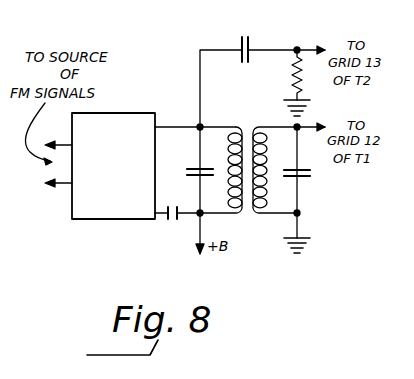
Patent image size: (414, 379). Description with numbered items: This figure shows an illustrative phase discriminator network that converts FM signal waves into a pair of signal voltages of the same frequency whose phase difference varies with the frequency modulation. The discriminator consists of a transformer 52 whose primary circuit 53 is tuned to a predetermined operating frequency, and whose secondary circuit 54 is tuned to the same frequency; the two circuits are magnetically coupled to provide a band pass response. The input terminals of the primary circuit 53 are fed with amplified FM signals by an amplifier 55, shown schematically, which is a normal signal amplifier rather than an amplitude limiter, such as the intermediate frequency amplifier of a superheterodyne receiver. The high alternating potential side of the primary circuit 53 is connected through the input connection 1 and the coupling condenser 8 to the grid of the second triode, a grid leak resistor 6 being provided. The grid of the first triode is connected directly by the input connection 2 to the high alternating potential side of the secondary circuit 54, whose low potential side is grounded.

The input connection 1 is at (210, 49).
The input connection 2 is at (301, 125).
The grid leak resistor 6 is at (292, 70).
The coupling condenser 8 is at (243, 64).
The transformer 52 is at (249, 131).
The primary circuit 53 is at (201, 140).
The secondary circuit 54 is at (283, 186).
The amplifier 55 is at (88, 208).